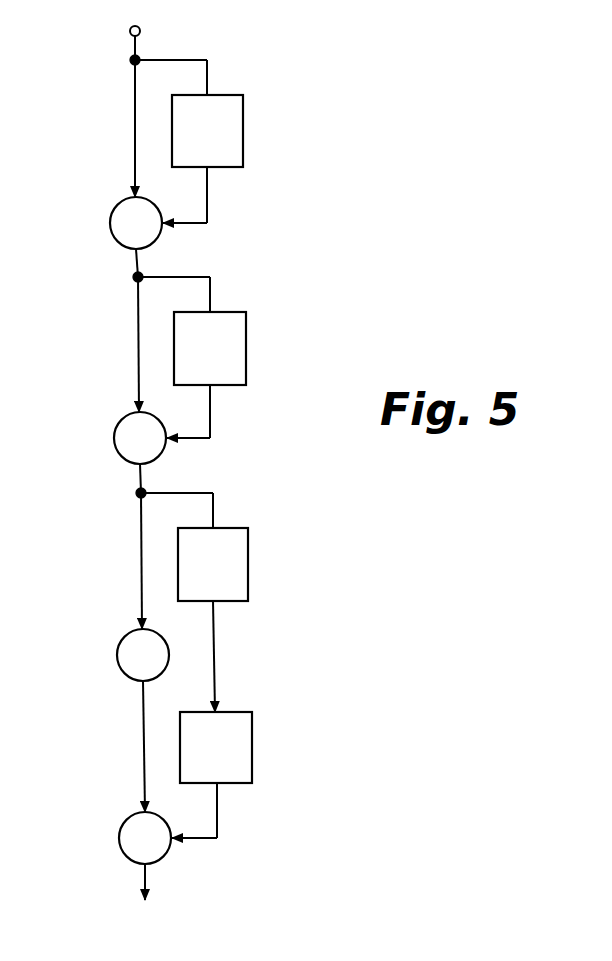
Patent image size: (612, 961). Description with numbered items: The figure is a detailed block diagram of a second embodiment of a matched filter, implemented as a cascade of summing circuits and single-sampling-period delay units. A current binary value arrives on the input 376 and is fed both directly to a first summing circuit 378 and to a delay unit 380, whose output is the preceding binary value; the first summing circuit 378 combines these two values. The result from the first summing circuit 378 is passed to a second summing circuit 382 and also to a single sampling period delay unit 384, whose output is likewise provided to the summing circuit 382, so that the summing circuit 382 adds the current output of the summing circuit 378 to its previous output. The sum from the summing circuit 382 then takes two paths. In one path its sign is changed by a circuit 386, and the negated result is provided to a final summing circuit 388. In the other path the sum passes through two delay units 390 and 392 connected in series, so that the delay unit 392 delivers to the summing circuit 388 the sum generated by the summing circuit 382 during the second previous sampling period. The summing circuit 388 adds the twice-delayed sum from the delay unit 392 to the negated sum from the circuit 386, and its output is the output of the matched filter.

The input 376 is at (140, 27).
The first summing circuit 378 is at (114, 208).
The delay unit 380 is at (243, 118).
The summing circuit 382 is at (118, 420).
The single sampling period delay unit 384 is at (246, 350).
The sign-changing circuit 386 is at (120, 638).
The summing circuit 388 is at (124, 822).
The delay unit 390 is at (248, 545).
The delay unit 392 is at (252, 718).